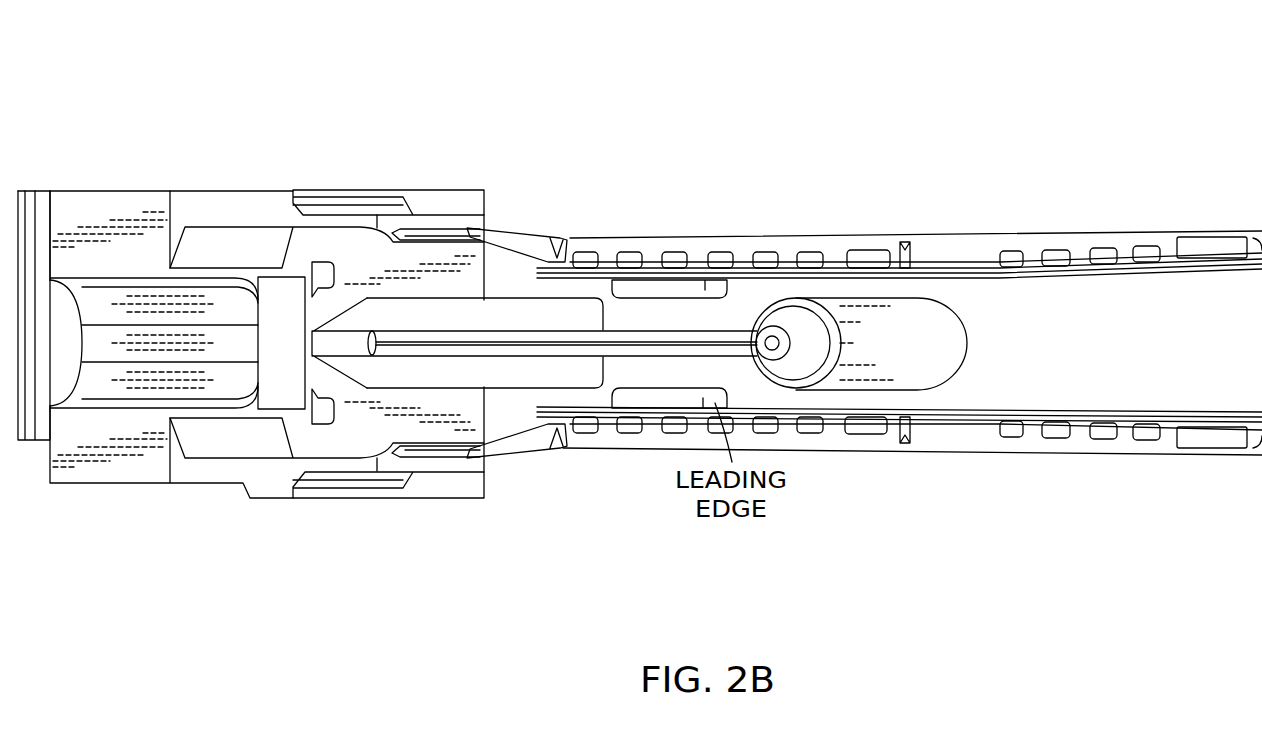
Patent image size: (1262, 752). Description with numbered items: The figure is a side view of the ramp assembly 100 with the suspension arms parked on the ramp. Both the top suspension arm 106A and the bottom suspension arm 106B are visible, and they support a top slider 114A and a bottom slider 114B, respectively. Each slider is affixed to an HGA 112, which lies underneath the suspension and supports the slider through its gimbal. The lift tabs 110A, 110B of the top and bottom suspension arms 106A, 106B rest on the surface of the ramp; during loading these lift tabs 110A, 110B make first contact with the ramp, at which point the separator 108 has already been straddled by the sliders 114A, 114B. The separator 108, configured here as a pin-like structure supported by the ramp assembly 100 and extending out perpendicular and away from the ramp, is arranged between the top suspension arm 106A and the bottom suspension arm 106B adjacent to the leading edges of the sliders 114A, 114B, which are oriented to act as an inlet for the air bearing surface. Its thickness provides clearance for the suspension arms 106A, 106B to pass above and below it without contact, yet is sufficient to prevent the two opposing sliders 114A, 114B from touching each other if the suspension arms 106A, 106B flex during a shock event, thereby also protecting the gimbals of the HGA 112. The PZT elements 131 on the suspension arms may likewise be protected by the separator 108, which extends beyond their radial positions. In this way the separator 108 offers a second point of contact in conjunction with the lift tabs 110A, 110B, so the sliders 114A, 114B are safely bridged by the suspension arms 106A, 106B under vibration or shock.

The ramp assembly 100 is at (230, 190).
The lift tab 110A is at (447, 233).
The lift tab 110B is at (437, 446).
The HGA 112 is at (566, 252).
The top slider 114A is at (730, 290).
The bottom slider 114B is at (650, 398).
The top suspension arm 106A is at (780, 240).
The bottom suspension arm 106B is at (808, 450).
The separator 108 is at (1055, 331).
The PZT elements 131 is at (858, 260).